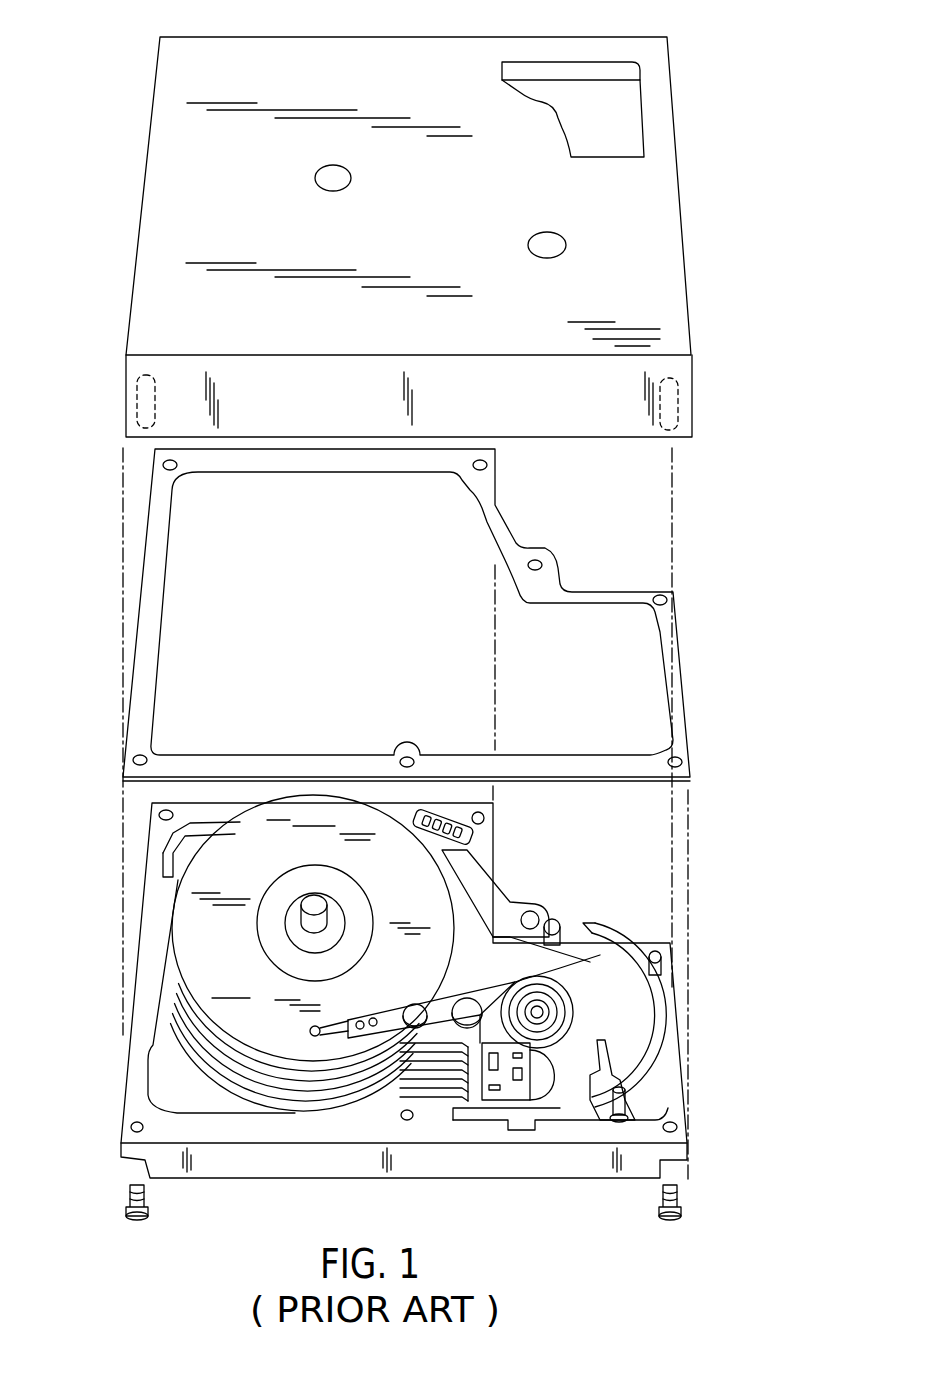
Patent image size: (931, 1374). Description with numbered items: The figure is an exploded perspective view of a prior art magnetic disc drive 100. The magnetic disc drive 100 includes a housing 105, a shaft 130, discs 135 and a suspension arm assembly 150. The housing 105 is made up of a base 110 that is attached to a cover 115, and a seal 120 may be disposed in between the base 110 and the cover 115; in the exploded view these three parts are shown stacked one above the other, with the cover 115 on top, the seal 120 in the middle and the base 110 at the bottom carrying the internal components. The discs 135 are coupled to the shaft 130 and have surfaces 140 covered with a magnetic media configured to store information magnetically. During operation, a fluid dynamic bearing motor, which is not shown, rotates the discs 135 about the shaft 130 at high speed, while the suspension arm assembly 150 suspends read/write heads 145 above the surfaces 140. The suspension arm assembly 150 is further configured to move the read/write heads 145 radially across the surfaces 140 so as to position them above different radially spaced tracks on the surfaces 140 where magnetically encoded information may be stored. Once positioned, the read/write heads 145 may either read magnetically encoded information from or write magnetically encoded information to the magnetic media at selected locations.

The magnetic disc drive 100 is at (114, 57).
The housing 105 is at (692, 112).
The base 110 is at (690, 1050).
The cover 115 is at (683, 210).
The seal 120 is at (680, 665).
The shaft 130 is at (292, 931).
The discs 135 is at (178, 993).
The surfaces 140 is at (266, 988).
The read/write heads 145 is at (312, 1038).
The suspension arm assembly 150 is at (441, 1100).